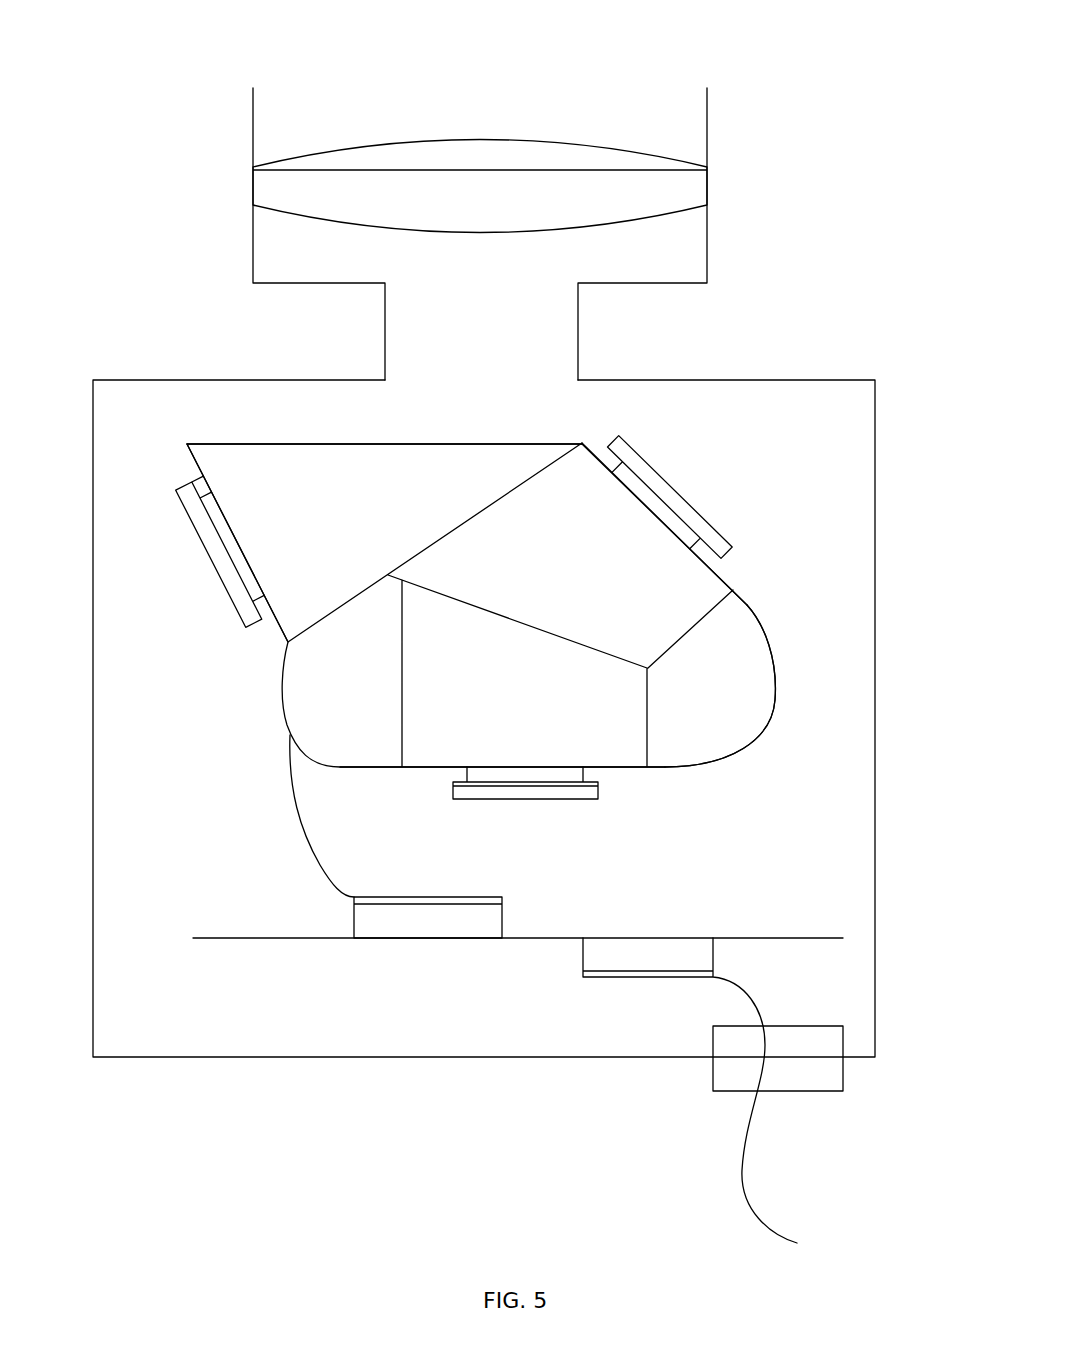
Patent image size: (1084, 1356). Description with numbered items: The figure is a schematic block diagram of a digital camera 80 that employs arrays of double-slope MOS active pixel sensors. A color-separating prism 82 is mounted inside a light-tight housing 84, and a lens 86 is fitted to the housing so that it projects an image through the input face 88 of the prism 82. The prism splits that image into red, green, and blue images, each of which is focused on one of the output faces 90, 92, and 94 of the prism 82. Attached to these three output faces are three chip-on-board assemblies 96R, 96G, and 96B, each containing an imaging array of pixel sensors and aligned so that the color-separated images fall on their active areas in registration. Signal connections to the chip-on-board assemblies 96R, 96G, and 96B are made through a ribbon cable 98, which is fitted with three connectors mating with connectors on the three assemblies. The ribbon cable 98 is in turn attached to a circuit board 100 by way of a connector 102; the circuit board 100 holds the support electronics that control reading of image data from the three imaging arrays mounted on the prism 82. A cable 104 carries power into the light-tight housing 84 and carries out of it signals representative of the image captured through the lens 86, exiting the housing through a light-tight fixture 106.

The digital camera 80 is at (527, 55).
The lens 86 is at (697, 182).
The light-tight housing 84 is at (875, 790).
The color-separating prism 82 is at (628, 578).
The input face 88 is at (416, 438).
The output face 90 is at (190, 477).
The output face 94 is at (588, 441).
The output face 92 is at (437, 768).
The chip-on-board assembly 96R is at (223, 575).
The chip-on-board assembly 96G is at (662, 482).
The chip-on-board assembly 96B is at (590, 790).
The ribbon cable 98 is at (290, 770).
The circuit board 100 is at (323, 939).
The connector 102 is at (437, 915).
The cable 104 is at (750, 1185).
The light-tight fixture 106 is at (810, 1073).